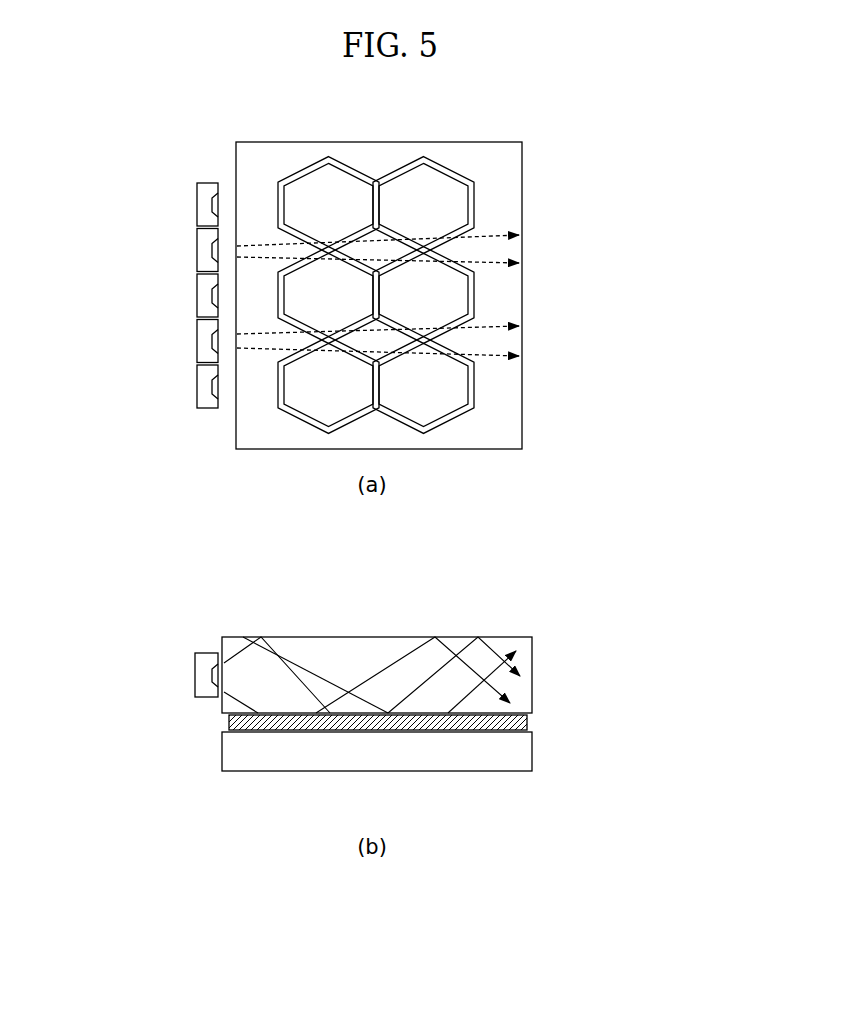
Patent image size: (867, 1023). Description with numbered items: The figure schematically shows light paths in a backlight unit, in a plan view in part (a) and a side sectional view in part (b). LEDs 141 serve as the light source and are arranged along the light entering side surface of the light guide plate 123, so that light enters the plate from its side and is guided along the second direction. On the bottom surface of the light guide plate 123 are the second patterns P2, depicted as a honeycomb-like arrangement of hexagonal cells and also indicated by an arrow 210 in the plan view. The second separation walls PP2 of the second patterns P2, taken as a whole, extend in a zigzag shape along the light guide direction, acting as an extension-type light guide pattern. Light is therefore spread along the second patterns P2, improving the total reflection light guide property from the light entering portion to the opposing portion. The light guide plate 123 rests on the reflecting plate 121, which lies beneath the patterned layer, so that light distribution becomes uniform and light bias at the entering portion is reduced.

The light guide plate 123 is at (523, 372).
The hexagonal pattern 210 is at (494, 284).
The second patterns P2 is at (410, 218).
The LEDs 141 is at (196, 190).
The reflecting plate 121 is at (533, 751).
The second separation walls PP2 is at (483, 731).